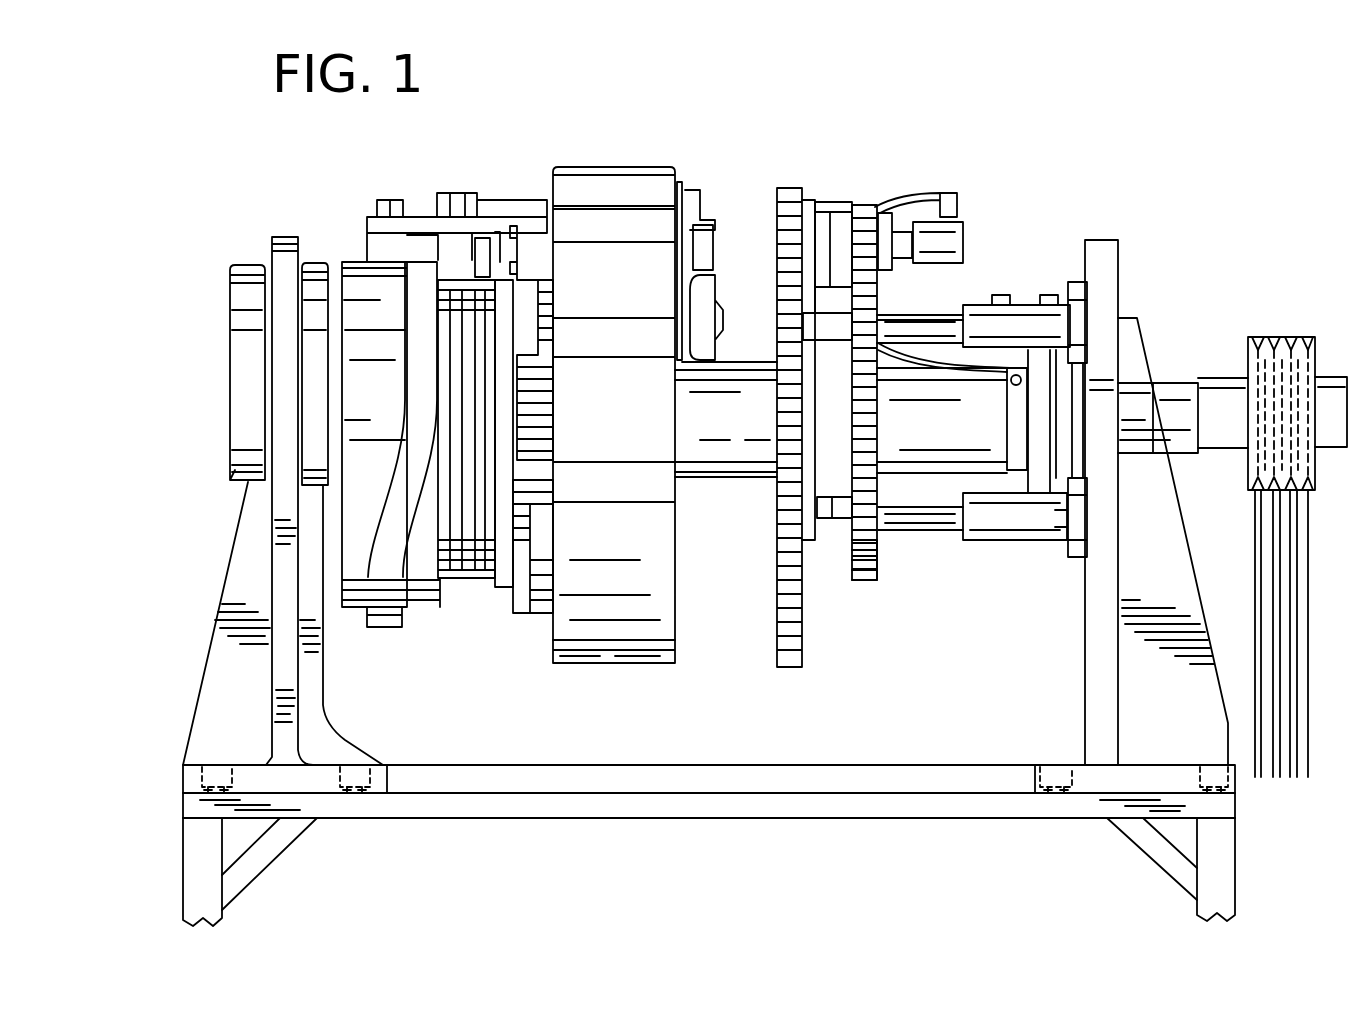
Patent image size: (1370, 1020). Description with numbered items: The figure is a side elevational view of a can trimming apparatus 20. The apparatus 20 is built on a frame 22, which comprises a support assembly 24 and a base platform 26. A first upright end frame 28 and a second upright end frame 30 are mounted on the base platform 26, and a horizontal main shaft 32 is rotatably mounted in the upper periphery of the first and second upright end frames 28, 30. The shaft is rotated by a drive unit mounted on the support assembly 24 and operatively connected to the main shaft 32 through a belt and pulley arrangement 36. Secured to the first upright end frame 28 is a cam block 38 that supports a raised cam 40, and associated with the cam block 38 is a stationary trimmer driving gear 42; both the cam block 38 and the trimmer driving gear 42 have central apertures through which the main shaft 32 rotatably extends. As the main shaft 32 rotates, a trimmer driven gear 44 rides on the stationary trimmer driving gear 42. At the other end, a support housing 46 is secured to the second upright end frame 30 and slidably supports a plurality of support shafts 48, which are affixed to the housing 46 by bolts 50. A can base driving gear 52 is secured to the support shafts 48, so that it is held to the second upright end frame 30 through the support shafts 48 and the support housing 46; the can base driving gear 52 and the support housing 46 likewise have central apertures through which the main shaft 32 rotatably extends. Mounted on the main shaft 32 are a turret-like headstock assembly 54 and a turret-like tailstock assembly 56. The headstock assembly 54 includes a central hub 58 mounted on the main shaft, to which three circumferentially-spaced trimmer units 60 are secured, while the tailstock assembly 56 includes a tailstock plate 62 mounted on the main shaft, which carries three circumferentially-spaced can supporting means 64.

The can trimming apparatus 20 is at (700, 152).
The frame 22 is at (180, 853).
The support assembly 24 is at (280, 868).
The base platform 26 is at (641, 810).
The first upright end frame 28 is at (230, 652).
The second upright end frame 30 is at (1128, 656).
The main shaft 32 is at (1210, 407).
The belt and pulley arrangement 36 is at (1303, 583).
The cam block 38 is at (433, 600).
The raised cam 40 is at (386, 628).
The trimmer driving gear 42 is at (507, 580).
The trimmer driven gear 44 is at (544, 276).
The support housing 46 is at (1023, 320).
The support shafts 48 is at (932, 302).
The bolts 50 is at (1000, 294).
The can base driving gear 52 is at (865, 553).
The headstock assembly 54 is at (643, 164).
The tailstock assembly 56 is at (869, 198).
The central hub 58 is at (638, 642).
The trimmer units 60 is at (716, 275).
The tailstock plate 62 is at (792, 644).
The can supporting means 64 is at (826, 196).